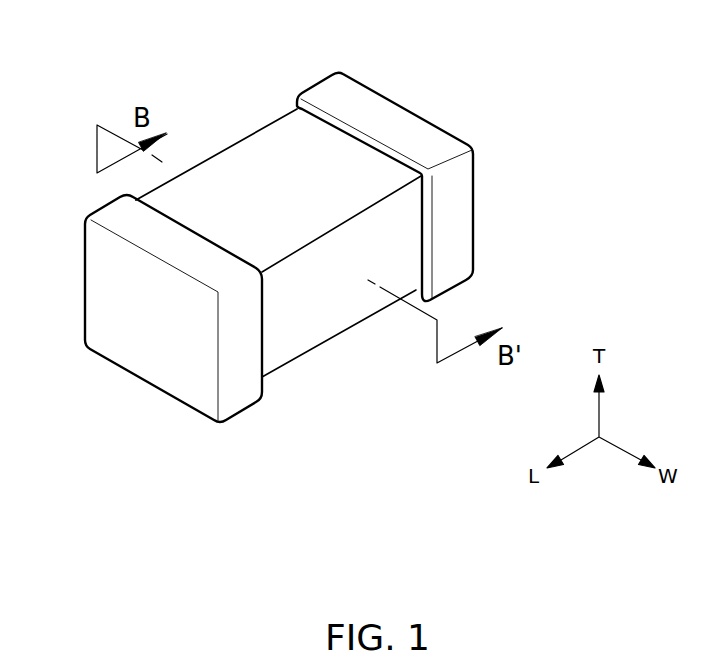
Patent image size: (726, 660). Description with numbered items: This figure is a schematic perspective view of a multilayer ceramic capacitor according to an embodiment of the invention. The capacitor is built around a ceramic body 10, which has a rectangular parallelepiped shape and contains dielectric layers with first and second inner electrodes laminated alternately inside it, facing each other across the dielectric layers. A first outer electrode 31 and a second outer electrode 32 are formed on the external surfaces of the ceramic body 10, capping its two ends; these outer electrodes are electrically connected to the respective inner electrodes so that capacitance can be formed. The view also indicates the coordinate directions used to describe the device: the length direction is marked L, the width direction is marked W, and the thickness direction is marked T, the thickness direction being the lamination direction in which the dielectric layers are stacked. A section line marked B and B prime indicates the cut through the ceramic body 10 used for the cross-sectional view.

The ceramic body 10 is at (268, 140).
The first outer electrode 31 is at (235, 403).
The second outer electrode 32 is at (465, 248).